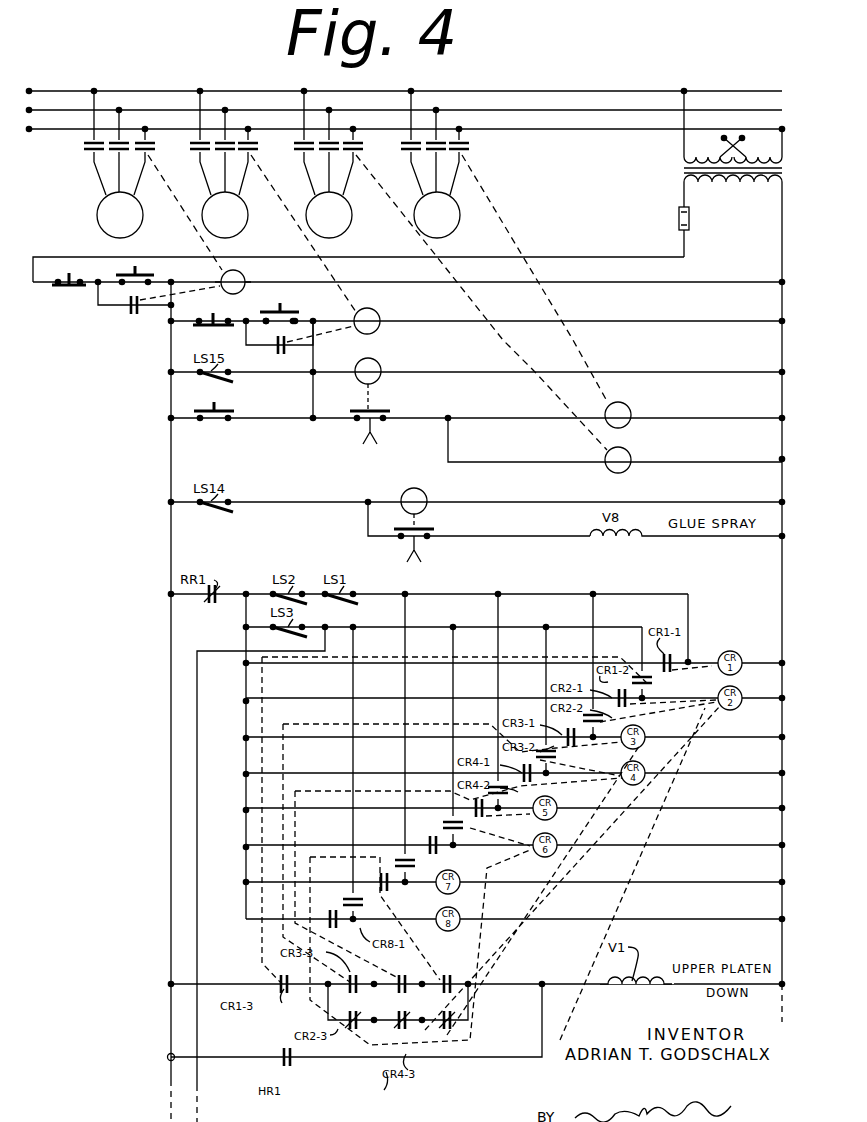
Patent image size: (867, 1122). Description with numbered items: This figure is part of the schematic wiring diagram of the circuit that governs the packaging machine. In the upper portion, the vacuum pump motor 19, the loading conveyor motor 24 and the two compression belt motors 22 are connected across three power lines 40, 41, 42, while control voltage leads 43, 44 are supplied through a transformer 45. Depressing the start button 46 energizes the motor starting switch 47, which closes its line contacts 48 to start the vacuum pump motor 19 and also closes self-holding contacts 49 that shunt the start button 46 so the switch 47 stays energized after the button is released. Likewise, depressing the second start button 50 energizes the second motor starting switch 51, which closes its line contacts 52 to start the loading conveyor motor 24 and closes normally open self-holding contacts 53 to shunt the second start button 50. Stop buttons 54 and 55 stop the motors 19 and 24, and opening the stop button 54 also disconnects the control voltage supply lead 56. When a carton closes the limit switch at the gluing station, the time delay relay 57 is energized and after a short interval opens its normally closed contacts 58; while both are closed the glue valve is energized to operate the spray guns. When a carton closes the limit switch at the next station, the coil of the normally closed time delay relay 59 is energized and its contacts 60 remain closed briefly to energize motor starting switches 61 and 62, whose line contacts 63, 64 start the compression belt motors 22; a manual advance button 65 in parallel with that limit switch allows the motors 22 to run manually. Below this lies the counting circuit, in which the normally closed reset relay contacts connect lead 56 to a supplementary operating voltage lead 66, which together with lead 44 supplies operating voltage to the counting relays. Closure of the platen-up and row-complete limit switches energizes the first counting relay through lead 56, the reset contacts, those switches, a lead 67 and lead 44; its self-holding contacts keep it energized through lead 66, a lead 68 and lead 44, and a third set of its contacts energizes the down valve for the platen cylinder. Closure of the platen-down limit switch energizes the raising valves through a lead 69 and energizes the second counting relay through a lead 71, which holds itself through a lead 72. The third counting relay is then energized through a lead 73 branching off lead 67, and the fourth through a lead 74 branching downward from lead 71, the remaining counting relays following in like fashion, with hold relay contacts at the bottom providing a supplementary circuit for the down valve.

The vacuum pump motor 19 is at (119, 195).
The compression belt motors 22 is at (382, 195).
The loading conveyor motor 24 is at (224, 195).
The power line 40 is at (511, 91).
The power line 41 is at (551, 110).
The power line 42 is at (527, 131).
The control voltage lead 43 is at (548, 258).
The control voltage lead 44 is at (786, 292).
The transformer 45 is at (680, 172).
The start button 46 is at (145, 270).
The motor starting switch 47 is at (233, 282).
The line contacts 48 is at (122, 158).
The self-holding contacts 49 is at (128, 306).
The second start button 50 is at (287, 312).
The second motor starting switch 51 is at (367, 321).
The line contacts 52 is at (232, 158).
The self-holding contacts 53 is at (288, 349).
The stop button 54 is at (66, 292).
The stop button 55 is at (212, 327).
The control voltage supply lead 56 is at (170, 459).
The time delay relay 57 is at (414, 501).
The normally closed contacts 58 is at (428, 533).
The time delay relay 59 is at (368, 371).
The contacts 60 is at (383, 410).
The motor starting switch 61 is at (618, 415).
The motor starting switch 62 is at (618, 460).
The line contacts 63 is at (444, 158).
The line contacts 64 is at (336, 158).
The manual advance button 65 is at (233, 410).
The supplementary operating voltage lead 66 is at (246, 688).
The lead 67 is at (532, 600).
The lead 68 is at (273, 662).
The lead 69 is at (198, 830).
The lead 71 is at (468, 622).
The lead 72 is at (290, 704).
The lead 73 is at (598, 611).
The lead 74 is at (546, 642).